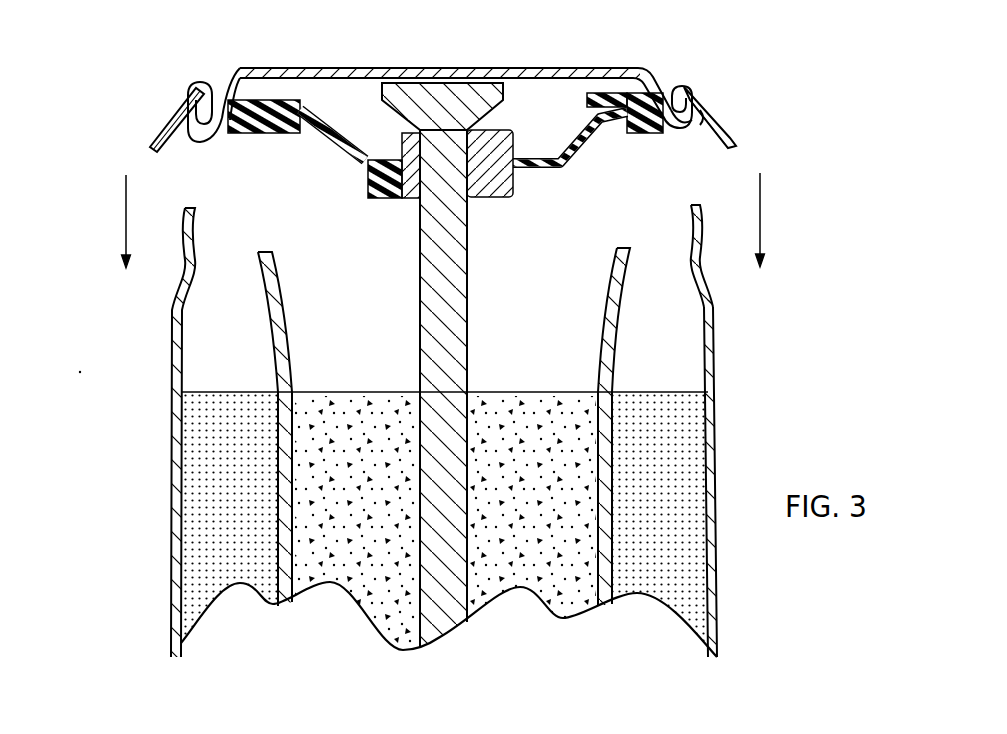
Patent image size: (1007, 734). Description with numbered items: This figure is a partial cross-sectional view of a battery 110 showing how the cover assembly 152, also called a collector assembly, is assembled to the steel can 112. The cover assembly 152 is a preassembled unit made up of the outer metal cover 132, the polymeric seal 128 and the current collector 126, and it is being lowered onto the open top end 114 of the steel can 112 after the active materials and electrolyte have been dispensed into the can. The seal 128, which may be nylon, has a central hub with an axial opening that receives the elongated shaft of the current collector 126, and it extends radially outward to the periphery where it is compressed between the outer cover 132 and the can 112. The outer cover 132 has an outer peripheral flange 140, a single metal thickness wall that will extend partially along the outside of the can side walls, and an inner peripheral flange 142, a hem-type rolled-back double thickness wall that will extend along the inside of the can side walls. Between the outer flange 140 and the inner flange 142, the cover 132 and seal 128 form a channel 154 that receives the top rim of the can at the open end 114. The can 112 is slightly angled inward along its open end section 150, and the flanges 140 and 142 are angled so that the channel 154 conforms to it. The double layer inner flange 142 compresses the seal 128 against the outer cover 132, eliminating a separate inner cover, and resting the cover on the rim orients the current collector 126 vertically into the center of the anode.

The package 110 is at (822, 330).
The steel can 112 is at (718, 407).
The open top end 114 is at (718, 174).
The current collector 126 is at (440, 305).
The polymeric seal 128 is at (313, 122).
The outer metal cover 132 is at (460, 68).
The outer peripheral flange 140 is at (717, 127).
The inner peripheral flange 142 is at (667, 92).
The open end section 150 is at (690, 230).
The cover assembly 152 is at (132, 92).
The channel 154 is at (710, 145).